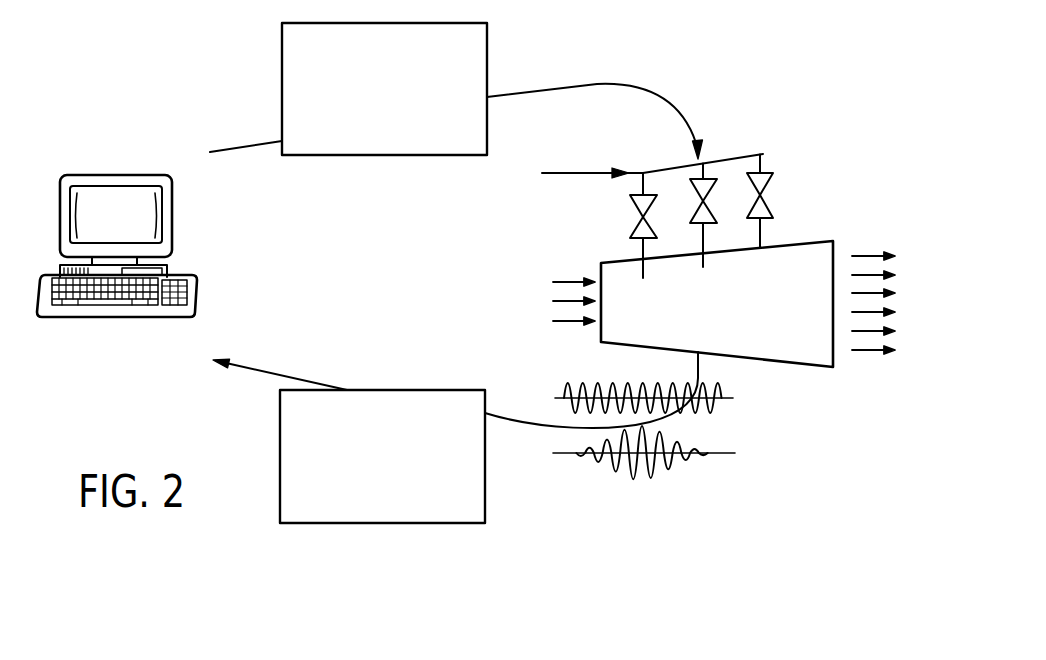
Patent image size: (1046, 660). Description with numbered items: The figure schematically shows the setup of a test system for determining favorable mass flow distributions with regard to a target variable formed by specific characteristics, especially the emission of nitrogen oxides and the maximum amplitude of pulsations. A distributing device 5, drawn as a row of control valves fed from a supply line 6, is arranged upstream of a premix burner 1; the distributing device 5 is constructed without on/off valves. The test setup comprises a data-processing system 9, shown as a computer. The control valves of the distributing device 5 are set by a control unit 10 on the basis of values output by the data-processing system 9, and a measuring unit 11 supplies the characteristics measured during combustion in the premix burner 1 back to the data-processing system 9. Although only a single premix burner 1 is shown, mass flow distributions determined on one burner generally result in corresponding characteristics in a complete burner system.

The premix burner 1 is at (793, 258).
The distributing device 5 is at (763, 156).
The inlet line 6 is at (572, 177).
The data-processing system 9 is at (172, 220).
The control unit 10 is at (389, 97).
The measuring unit 11 is at (385, 464).